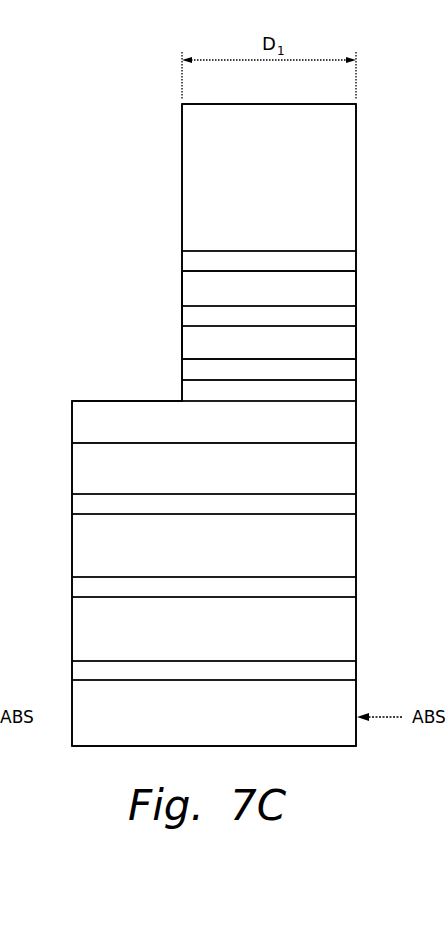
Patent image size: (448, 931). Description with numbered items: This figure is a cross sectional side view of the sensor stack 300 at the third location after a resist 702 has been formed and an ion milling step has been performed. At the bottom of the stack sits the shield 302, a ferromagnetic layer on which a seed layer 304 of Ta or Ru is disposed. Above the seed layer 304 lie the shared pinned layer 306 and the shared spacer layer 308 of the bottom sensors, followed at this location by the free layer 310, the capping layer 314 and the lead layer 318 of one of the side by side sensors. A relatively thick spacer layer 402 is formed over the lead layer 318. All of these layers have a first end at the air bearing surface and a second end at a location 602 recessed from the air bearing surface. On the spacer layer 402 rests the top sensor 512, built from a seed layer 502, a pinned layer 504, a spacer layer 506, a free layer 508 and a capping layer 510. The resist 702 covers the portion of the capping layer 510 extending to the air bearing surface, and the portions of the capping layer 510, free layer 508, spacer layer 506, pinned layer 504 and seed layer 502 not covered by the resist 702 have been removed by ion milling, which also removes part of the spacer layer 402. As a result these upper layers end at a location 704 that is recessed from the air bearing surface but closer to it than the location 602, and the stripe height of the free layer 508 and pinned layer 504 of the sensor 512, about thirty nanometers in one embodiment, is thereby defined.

The sensor stack 300 is at (146, 85).
The location 704 is at (158, 193).
The resist 702 is at (269, 177).
The capping layer 510 is at (348, 261).
The free layer 508 is at (269, 288).
The spacer layer 506 is at (348, 318).
The pinned layer 504 is at (269, 342).
The seed layer 502 is at (348, 371).
The sensor 512 is at (175, 272).
The spacer layer 402 is at (214, 411).
The location 602 is at (47, 465).
The lead layer 318 is at (214, 468).
The capping layer 314 is at (347, 505).
The free layer 310 is at (214, 545).
The spacer layer 308 is at (347, 588).
The pinned layer 306 is at (214, 629).
The seed layer 304 is at (348, 671).
The shield 302 is at (214, 713).